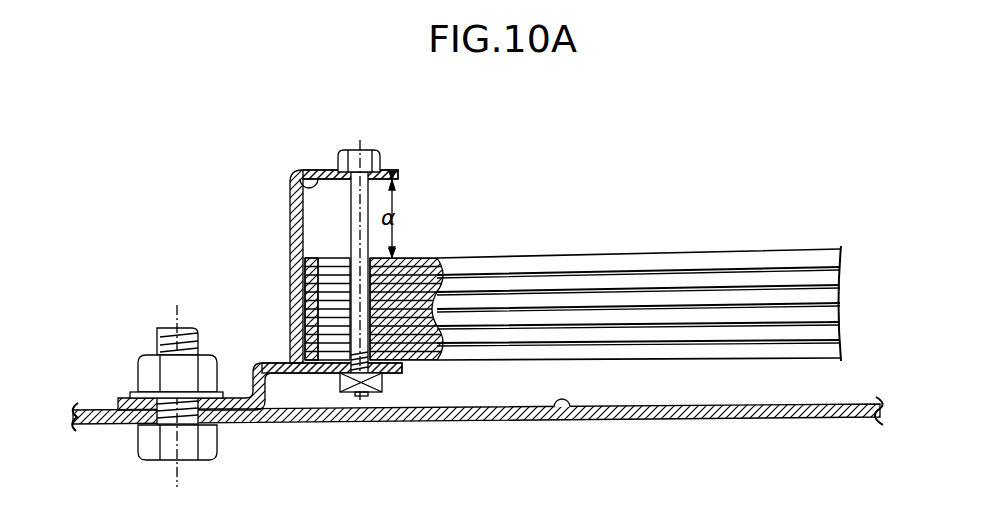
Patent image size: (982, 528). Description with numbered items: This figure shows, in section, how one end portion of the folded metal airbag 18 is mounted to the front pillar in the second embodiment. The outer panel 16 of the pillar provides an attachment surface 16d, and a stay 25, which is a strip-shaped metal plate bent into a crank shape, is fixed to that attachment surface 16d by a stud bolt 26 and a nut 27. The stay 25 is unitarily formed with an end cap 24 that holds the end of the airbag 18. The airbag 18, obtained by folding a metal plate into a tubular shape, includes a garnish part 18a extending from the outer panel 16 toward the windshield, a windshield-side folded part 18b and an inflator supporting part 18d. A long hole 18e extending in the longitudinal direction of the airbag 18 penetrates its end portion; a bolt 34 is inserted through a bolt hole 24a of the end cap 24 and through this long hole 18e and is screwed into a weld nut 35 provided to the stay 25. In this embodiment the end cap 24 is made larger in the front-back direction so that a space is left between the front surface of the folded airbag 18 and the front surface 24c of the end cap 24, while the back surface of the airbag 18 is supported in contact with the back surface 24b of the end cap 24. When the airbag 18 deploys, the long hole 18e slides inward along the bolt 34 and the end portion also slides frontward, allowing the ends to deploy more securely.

The outer panel 16 is at (706, 422).
The attachment surface 16d is at (572, 407).
The airbag 18 is at (716, 247).
The garnish part 18a is at (610, 255).
The windshield-side folded part 18b is at (740, 315).
The inflator supporting part 18d is at (610, 360).
The long hole 18e is at (342, 305).
The end cap 24 is at (289, 258).
The bolt hole 24a is at (378, 165).
The back surface 24b is at (306, 326).
The front surface 24c is at (308, 172).
The stay 25 is at (244, 397).
The stud bolt 26 is at (168, 452).
The nut 27 is at (140, 376).
The bolt 34 is at (357, 152).
The weld nut 35 is at (383, 380).